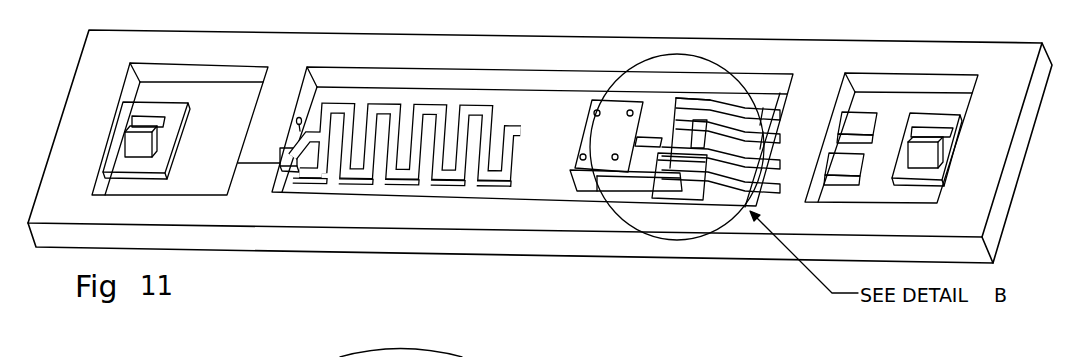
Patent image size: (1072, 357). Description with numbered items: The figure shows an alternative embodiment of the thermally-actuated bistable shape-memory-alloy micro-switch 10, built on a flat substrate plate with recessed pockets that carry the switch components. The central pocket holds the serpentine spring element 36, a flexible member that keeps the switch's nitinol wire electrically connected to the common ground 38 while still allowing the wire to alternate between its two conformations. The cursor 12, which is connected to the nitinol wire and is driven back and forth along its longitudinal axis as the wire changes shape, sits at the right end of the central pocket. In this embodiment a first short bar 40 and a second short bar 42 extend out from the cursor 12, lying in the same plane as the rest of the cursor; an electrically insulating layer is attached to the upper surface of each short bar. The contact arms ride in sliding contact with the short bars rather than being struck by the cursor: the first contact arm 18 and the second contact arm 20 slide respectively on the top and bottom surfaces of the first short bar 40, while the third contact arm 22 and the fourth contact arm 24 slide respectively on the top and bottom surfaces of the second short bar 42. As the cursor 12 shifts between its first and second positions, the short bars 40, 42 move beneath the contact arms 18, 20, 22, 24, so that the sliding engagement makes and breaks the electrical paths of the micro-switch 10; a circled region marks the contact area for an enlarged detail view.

The micro-switch 10 is at (256, 283).
The cursor 12 is at (603, 140).
The first contact arm 18 is at (670, 112).
The second contact arm 20 is at (750, 115).
The third contact arm 22 is at (733, 173).
The fourth contact arm 24 is at (693, 160).
The spring element 36 is at (423, 183).
The common ground 38 is at (652, 126).
The first short bar 40 is at (662, 118).
The second short bar 42 is at (647, 168).